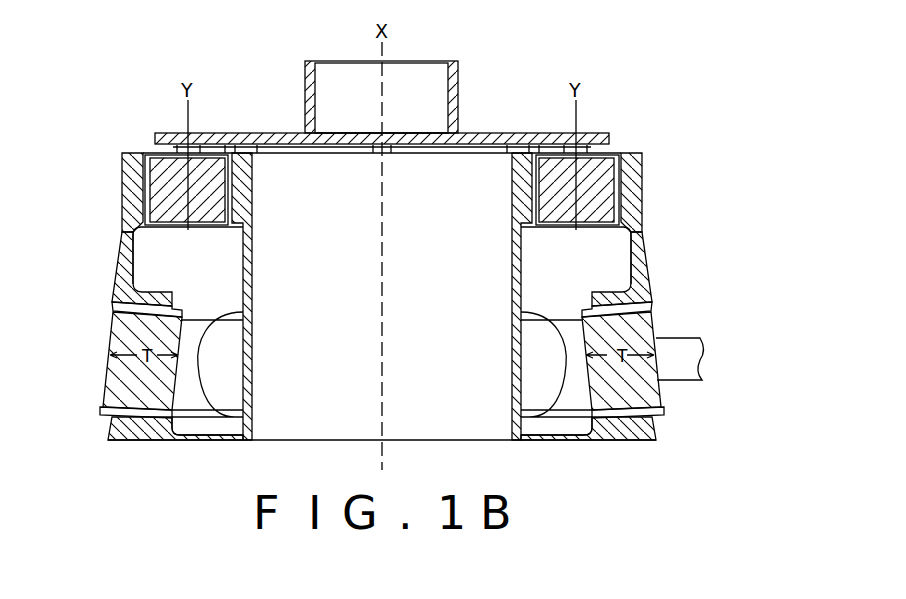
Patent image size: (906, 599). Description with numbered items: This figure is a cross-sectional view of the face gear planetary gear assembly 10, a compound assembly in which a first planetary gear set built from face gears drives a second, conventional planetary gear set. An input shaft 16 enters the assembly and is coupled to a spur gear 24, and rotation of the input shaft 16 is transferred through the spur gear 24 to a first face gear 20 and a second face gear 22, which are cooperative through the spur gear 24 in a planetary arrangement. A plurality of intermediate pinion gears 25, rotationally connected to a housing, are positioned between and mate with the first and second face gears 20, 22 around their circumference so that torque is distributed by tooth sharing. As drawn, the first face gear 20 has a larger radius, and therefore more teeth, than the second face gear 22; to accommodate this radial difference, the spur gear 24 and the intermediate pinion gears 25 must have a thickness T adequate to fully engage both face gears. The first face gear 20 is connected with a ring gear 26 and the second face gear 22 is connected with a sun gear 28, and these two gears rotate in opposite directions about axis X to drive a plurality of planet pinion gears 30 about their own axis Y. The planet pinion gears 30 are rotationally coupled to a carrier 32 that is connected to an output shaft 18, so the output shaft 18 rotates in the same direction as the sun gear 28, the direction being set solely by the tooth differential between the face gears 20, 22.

The face gear planetary gear assembly 10 is at (683, 85).
The input shaft 16 is at (682, 373).
The output shaft 18 is at (452, 81).
The first face gear 20 is at (645, 280).
The second face gear 22 is at (652, 472).
The spur gear 24 is at (643, 330).
The intermediate pinion gears 25 is at (130, 397).
The ring gear 26 is at (640, 183).
The sun gear 28 is at (523, 160).
The planet pinion gears 30 is at (616, 158).
The carrier 32 is at (262, 135).